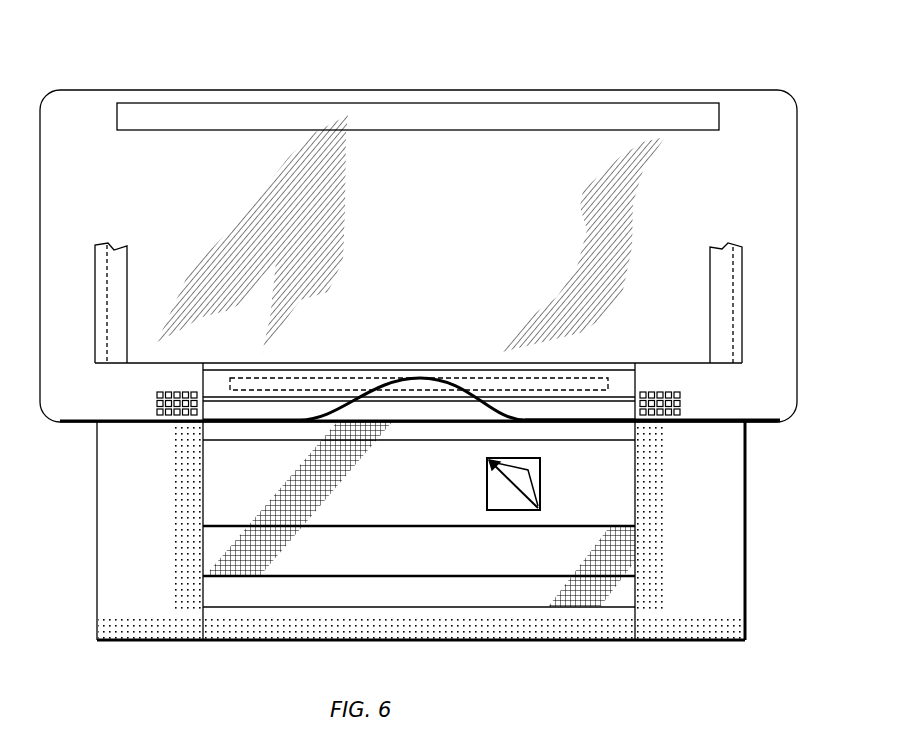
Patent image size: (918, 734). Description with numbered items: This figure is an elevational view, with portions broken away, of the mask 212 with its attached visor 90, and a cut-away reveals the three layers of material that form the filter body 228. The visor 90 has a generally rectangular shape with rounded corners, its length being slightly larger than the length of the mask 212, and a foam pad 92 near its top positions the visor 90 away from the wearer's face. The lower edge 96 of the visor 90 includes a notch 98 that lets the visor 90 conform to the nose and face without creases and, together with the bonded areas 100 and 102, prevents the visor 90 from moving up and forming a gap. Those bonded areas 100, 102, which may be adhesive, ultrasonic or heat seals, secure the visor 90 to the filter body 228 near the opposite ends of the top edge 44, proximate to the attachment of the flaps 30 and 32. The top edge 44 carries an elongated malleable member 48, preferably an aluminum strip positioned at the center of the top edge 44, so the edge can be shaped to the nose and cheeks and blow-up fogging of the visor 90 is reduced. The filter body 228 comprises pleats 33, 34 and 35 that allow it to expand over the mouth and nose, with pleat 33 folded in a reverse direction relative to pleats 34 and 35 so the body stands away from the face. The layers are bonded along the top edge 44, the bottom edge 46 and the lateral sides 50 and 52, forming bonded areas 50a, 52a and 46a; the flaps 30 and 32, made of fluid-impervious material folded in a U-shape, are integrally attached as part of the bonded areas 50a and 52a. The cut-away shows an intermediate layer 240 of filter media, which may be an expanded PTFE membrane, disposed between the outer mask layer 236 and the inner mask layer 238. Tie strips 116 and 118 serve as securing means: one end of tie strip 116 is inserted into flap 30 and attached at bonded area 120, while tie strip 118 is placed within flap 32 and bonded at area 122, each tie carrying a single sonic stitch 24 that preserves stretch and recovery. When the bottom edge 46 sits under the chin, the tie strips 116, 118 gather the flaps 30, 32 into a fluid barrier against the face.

The visor 90 is at (108, 86).
The foam pad 92 is at (204, 113).
The tie strip 116 is at (124, 268).
The tie strip 118 is at (716, 270).
The single sonic stitch 24 is at (107, 302).
The top edge 44 is at (366, 370).
The malleable member 48 is at (332, 385).
The notch 98 is at (424, 380).
The lower edge 96 is at (590, 418).
The bonded area 100 is at (157, 400).
The bonded area 102 is at (682, 400).
The flap 30 is at (100, 548).
The flap 32 is at (735, 486).
The lateral side 50 is at (203, 504).
The bonded area 50a is at (178, 442).
The lateral side 52 is at (637, 504).
The bonded area 52a is at (660, 444).
The pleat 33 is at (272, 440).
The pleat 34 is at (342, 526).
The pleat 35 is at (392, 576).
The bottom edge 46 is at (310, 641).
The bonded area 46a is at (578, 636).
The outer mask layer 236 is at (540, 466).
The inner mask layer 238 is at (490, 486).
The intermediate layer 240 is at (540, 492).
The bonded area 120 is at (125, 641).
The bonded area 122 is at (694, 640).
The filter body 228 is at (252, 650).
The mask 212 is at (772, 543).